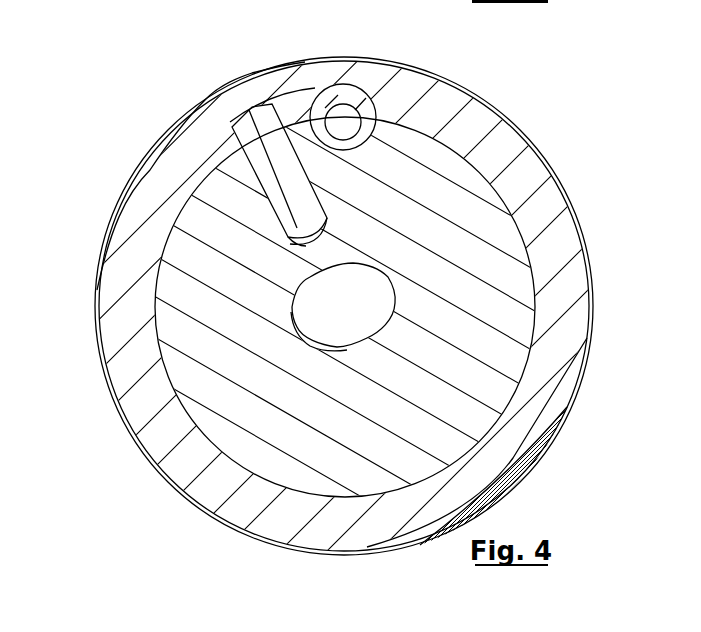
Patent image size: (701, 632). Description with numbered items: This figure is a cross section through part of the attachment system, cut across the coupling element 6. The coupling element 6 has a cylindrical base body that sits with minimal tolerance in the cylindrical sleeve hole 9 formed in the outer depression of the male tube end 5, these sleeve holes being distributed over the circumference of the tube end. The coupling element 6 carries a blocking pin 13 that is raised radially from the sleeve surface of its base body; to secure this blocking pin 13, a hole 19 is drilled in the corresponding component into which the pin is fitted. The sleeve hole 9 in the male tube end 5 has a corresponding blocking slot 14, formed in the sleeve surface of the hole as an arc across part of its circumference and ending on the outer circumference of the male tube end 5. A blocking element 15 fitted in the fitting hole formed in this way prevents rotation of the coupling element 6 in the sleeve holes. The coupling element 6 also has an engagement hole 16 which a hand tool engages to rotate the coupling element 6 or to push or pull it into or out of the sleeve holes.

The male tube end 5 is at (158, 175).
The coupling element 6 is at (503, 315).
The cylindrical sleeve hole 9 is at (517, 227).
The blocking pin 13 is at (250, 132).
The blocking slot 14 is at (290, 100).
The blocking element 15 is at (360, 97).
The engagement hole 16 is at (367, 288).
The hole 19 is at (288, 238).